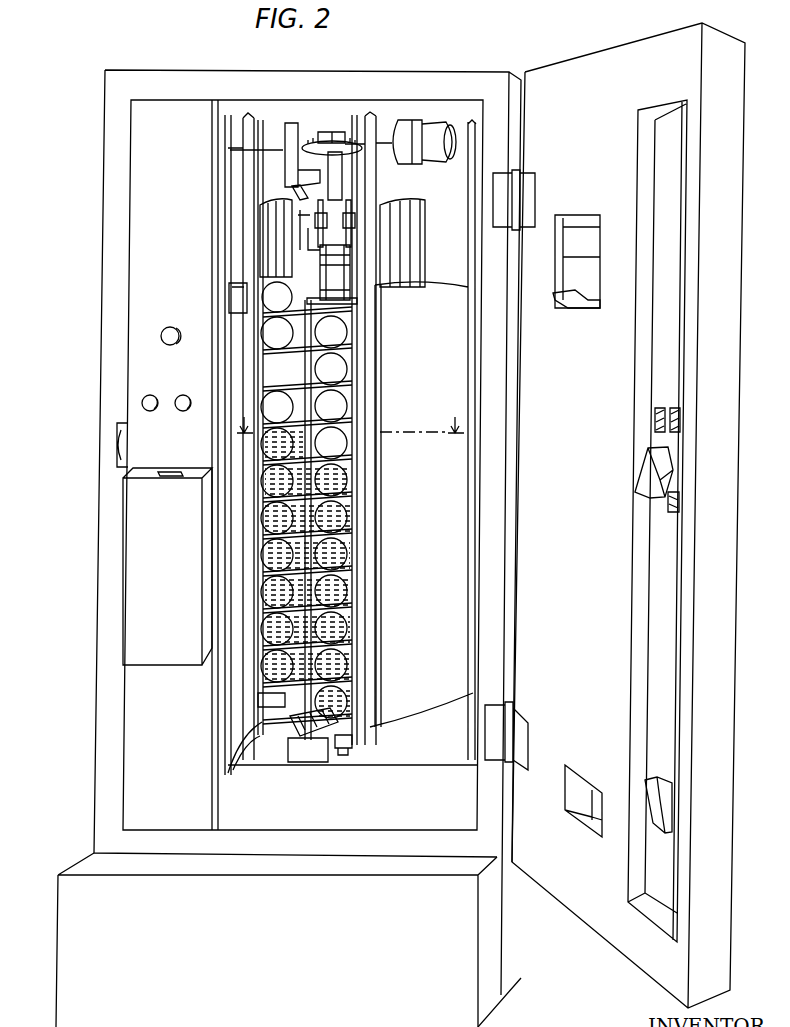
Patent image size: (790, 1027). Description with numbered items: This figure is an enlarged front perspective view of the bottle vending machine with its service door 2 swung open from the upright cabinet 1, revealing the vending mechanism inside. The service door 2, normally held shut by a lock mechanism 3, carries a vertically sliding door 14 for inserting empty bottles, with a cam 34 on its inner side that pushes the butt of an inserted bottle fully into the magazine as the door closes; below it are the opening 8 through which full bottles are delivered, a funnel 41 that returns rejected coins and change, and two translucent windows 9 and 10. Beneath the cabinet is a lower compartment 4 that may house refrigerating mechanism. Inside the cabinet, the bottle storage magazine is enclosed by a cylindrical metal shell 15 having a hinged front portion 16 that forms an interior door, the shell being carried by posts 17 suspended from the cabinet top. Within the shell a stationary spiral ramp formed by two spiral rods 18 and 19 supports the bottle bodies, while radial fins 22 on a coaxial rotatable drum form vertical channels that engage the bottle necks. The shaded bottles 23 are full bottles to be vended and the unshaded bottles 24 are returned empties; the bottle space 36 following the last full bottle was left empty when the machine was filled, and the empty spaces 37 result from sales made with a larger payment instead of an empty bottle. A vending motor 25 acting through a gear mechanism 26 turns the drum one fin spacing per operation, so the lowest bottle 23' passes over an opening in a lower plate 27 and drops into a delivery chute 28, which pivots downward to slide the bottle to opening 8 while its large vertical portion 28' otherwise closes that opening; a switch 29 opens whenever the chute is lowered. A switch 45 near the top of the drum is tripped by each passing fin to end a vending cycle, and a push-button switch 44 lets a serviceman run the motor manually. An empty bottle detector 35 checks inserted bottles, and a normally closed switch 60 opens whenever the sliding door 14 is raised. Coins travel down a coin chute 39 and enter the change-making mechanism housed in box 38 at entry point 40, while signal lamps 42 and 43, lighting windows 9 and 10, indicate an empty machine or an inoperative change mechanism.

The upright cabinet 1 is at (104, 163).
The service door 2 is at (582, 62).
The lock mechanism 3 is at (683, 500).
The lower compartment 4 is at (82, 866).
The opening for delivery of full bottles 8 is at (567, 775).
The translucent window 9 is at (678, 409).
The translucent window 10 is at (659, 406).
The sliding door 14 is at (593, 280).
The cylindrical metal shell 15 is at (448, 292).
The hinged front portion 16 is at (233, 318).
The posts 17 is at (242, 176).
The spiral rod 18 is at (343, 690).
The spiral rod 19 is at (345, 668).
The radial fins 22 is at (352, 200).
The shaded bottles 23 is at (340, 573).
The bottle at lower end of ramp 23' is at (356, 719).
The unshaded bottles 24 is at (340, 455).
The vending motor 25 is at (418, 164).
The gear mechanism 26 is at (340, 135).
The lower plate 27 is at (275, 720).
The delivery chute 28 is at (289, 750).
The large vertical portion of chute 28' is at (304, 744).
The switch 29 is at (355, 744).
The cam 34 is at (568, 305).
The empty bottle detector 35 is at (347, 284).
The bottle space 36 is at (255, 460).
The empty spaces 37 is at (305, 368).
The box 38 is at (130, 555).
The coin chute 39 is at (652, 468).
The coin mechanism entry 40 is at (168, 471).
The funnel 41 is at (670, 795).
The signal lamp 42 is at (151, 395).
The signal lamp 43 is at (184, 395).
The push-button switch 44 is at (164, 330).
The switch 45 is at (285, 173).
The normally closed switch 60 is at (300, 228).